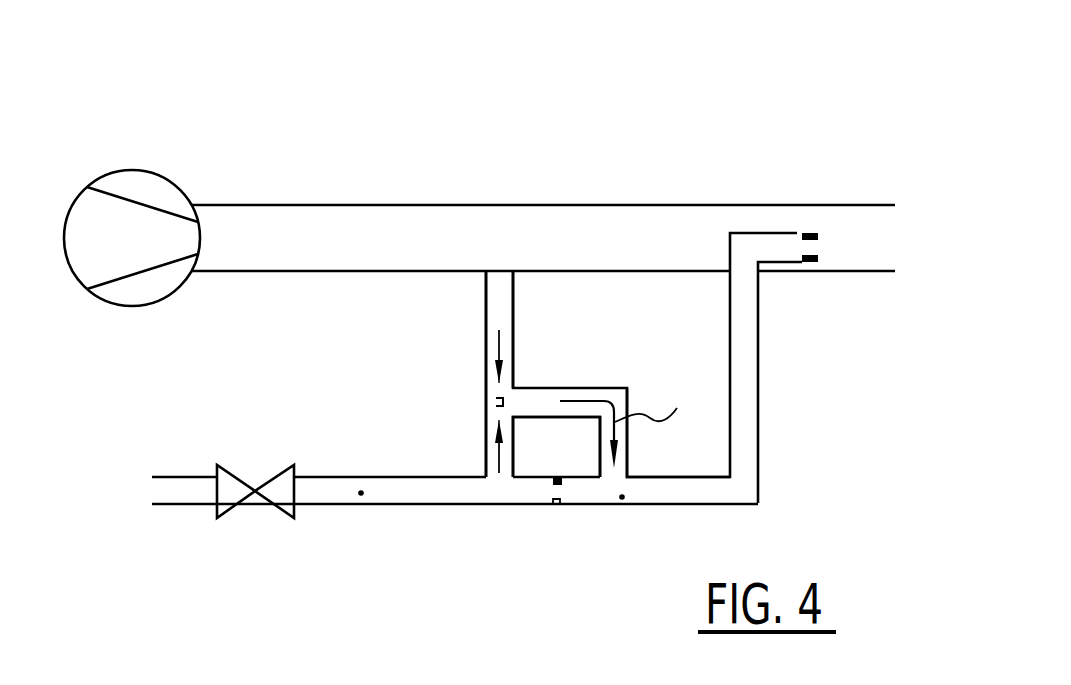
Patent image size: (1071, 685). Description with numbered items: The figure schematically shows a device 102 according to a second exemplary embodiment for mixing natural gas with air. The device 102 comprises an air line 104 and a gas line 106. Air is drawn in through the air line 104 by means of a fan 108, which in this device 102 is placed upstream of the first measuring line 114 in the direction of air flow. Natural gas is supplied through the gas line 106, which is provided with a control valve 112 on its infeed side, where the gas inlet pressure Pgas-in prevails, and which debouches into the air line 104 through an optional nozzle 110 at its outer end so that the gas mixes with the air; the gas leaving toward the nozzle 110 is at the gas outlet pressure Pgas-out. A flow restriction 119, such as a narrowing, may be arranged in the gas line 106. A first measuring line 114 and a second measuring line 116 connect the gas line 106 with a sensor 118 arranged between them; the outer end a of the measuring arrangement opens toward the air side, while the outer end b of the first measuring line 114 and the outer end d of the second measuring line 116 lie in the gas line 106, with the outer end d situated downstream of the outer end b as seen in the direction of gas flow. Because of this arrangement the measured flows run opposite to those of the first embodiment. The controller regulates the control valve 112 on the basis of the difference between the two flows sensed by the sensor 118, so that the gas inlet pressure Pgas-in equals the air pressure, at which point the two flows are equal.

The device 102 is at (607, 136).
The air line 104 is at (313, 203).
The gas line 106 is at (434, 505).
The fan 108 is at (155, 183).
The nozzle 110 is at (795, 235).
The control valve 112 is at (235, 473).
The first measuring line 114 is at (428, 325).
The second measuring line 116 is at (627, 398).
The sensor 118 is at (497, 400).
The flow restriction 119 is at (558, 504).
The outer end a is at (513, 292).
The outer end of measuring line 114 b is at (513, 465).
The outer end of measuring line 116 d is at (627, 462).
The gas inlet pressure Pgas-in is at (361, 493).
The gas outlet pressure Pgas-out is at (622, 497).